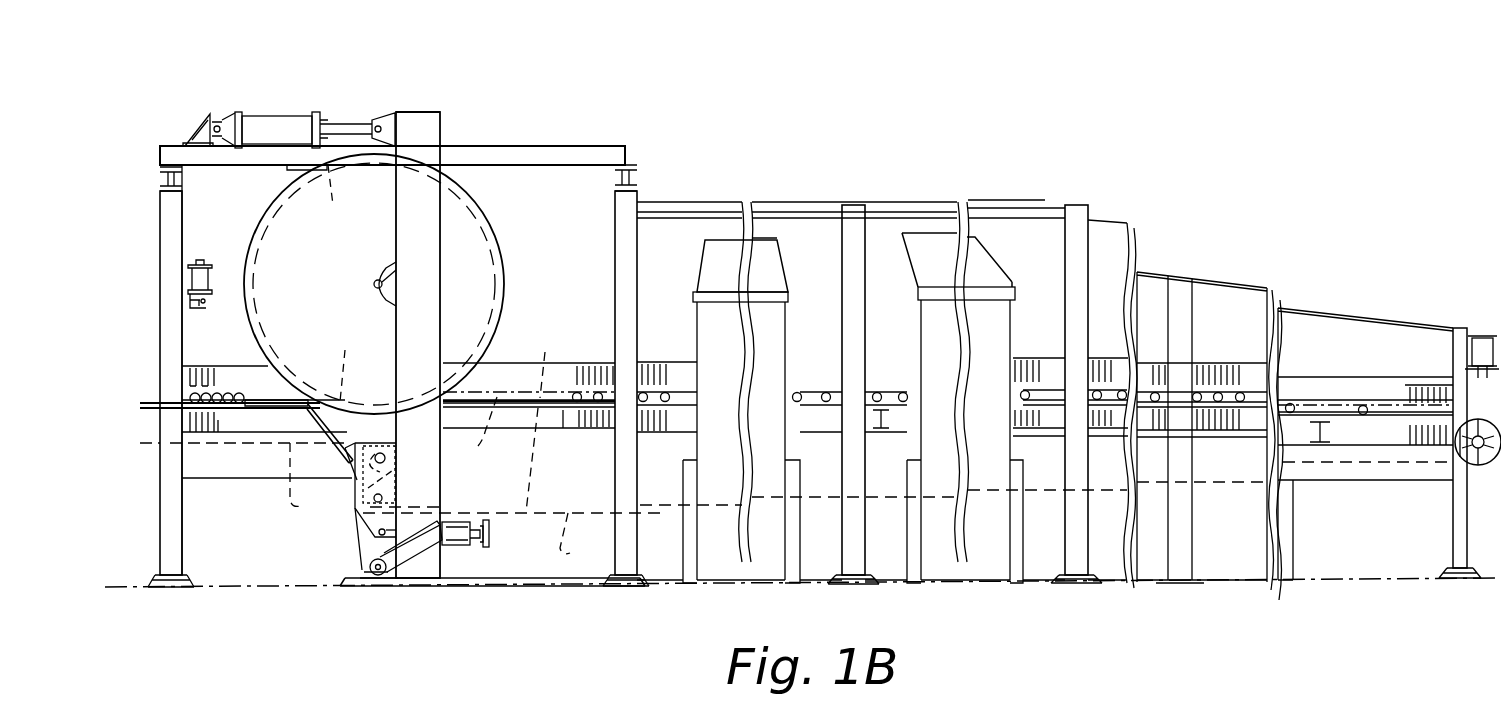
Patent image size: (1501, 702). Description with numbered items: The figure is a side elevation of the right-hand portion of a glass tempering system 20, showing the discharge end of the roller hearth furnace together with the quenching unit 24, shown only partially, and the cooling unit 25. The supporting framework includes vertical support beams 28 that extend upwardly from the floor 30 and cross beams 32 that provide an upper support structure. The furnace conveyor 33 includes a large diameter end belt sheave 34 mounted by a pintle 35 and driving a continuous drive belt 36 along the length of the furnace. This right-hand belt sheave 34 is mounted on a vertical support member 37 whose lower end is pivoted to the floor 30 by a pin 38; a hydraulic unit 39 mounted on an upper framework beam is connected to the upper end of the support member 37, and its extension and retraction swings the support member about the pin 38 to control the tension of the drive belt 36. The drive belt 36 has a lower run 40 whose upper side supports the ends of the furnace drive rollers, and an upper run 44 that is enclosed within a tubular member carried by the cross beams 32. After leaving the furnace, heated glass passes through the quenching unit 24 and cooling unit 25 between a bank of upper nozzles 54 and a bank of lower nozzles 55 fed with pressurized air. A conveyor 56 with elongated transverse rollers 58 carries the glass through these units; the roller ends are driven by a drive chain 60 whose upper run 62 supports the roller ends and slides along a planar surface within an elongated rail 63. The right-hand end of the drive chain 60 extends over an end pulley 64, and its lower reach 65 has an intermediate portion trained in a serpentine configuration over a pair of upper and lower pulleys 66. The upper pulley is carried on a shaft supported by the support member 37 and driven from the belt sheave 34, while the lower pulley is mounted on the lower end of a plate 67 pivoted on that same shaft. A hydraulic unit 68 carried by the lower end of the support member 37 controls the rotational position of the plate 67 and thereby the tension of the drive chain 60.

The glass tempering system 20 is at (402, 78).
The quenching unit 24 is at (252, 492).
The cooling unit 25 is at (912, 186).
The vertical support beams 28 is at (183, 252).
The floor 30 is at (1340, 578).
The cross beams 32 is at (178, 193).
The conveyor 33 is at (480, 197).
The belt sheaves 34 is at (493, 228).
The pintles 35 is at (376, 278).
The drive belt 36 is at (340, 283).
The vertical support member 37 is at (440, 325).
The pin 38 is at (381, 578).
The hydraulic unit 39 is at (280, 128).
The lower runs 40 is at (300, 402).
The upper runs 44 is at (300, 170).
The upper nozzles 54 is at (188, 378).
The lower nozzles 55 is at (190, 421).
The conveyor 56 is at (540, 398).
The rollers 58 is at (226, 393).
The drive chain 60 is at (520, 432).
The upper run 62 is at (480, 428).
The rail 63 is at (563, 412).
The end pulley 64 is at (1474, 462).
The lower reach 65 is at (475, 503).
The pulleys 66 is at (386, 458).
The plate 67 is at (358, 500).
The hydraulic unit 68 is at (460, 545).